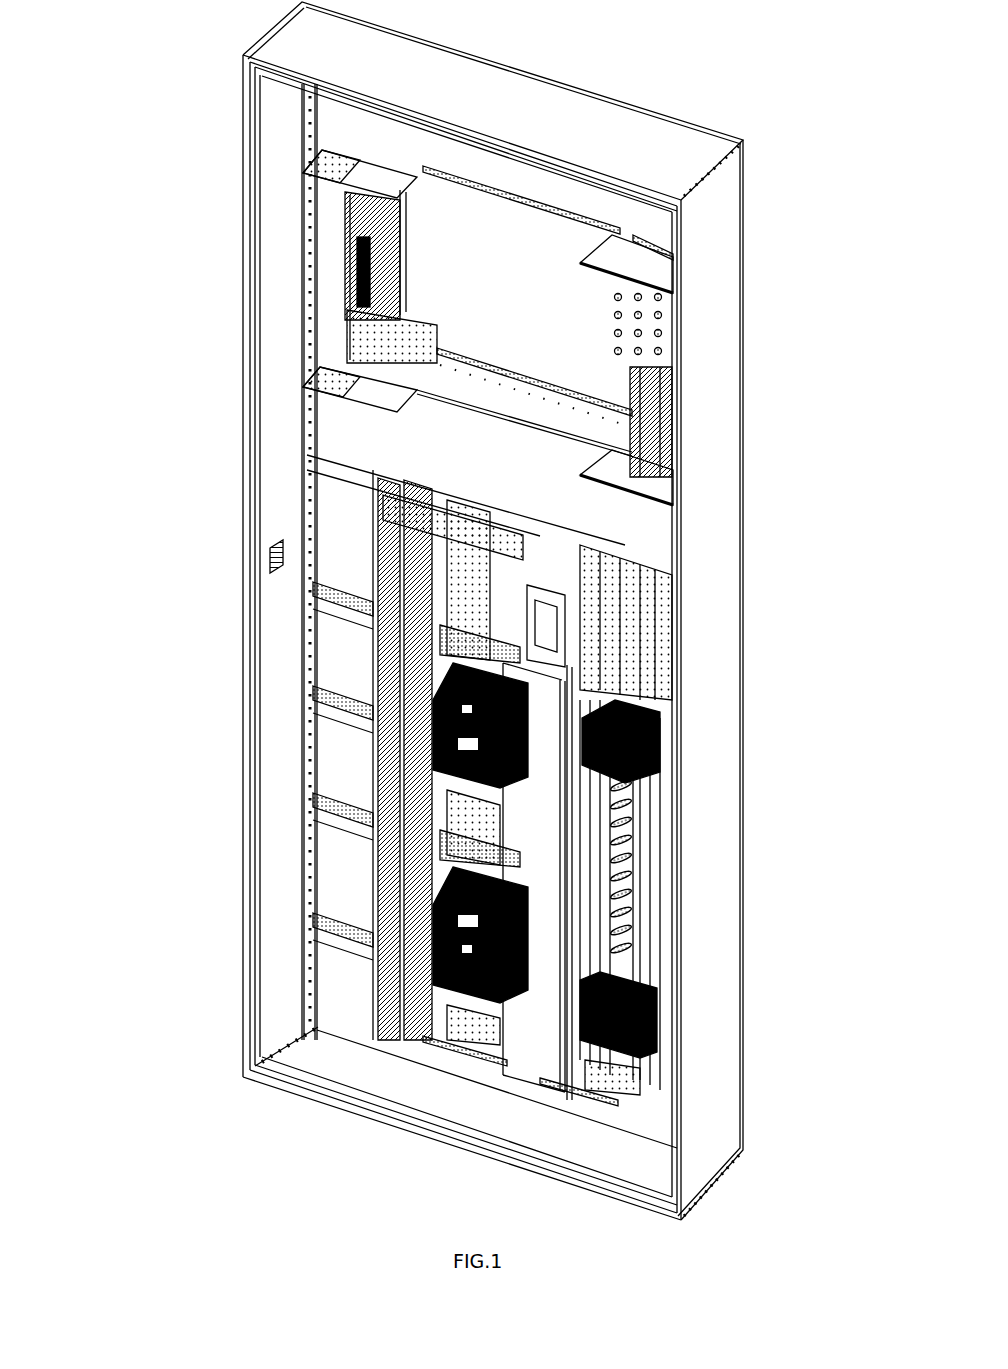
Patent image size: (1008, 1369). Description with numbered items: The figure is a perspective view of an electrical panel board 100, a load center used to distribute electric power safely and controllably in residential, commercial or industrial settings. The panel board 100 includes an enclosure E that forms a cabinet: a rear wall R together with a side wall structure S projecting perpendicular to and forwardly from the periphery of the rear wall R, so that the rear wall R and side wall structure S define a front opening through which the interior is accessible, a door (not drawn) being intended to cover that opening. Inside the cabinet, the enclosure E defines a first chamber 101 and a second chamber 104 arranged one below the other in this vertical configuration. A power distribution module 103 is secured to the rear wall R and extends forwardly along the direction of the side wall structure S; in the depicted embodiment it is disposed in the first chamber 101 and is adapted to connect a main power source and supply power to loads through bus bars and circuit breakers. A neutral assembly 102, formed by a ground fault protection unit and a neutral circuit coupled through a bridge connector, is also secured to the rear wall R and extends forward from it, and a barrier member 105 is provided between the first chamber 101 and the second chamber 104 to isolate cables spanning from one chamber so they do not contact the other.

The electrical panel board 100 is at (172, 280).
The side wall structure S is at (270, 108).
The enclosure E is at (233, 531).
The rear wall R is at (350, 667).
The first chamber 101 is at (535, 230).
The neutral assembly 102 is at (386, 356).
The power distribution module 103 is at (577, 850).
The second chamber 104 is at (337, 1008).
The barrier member 105 is at (653, 272).